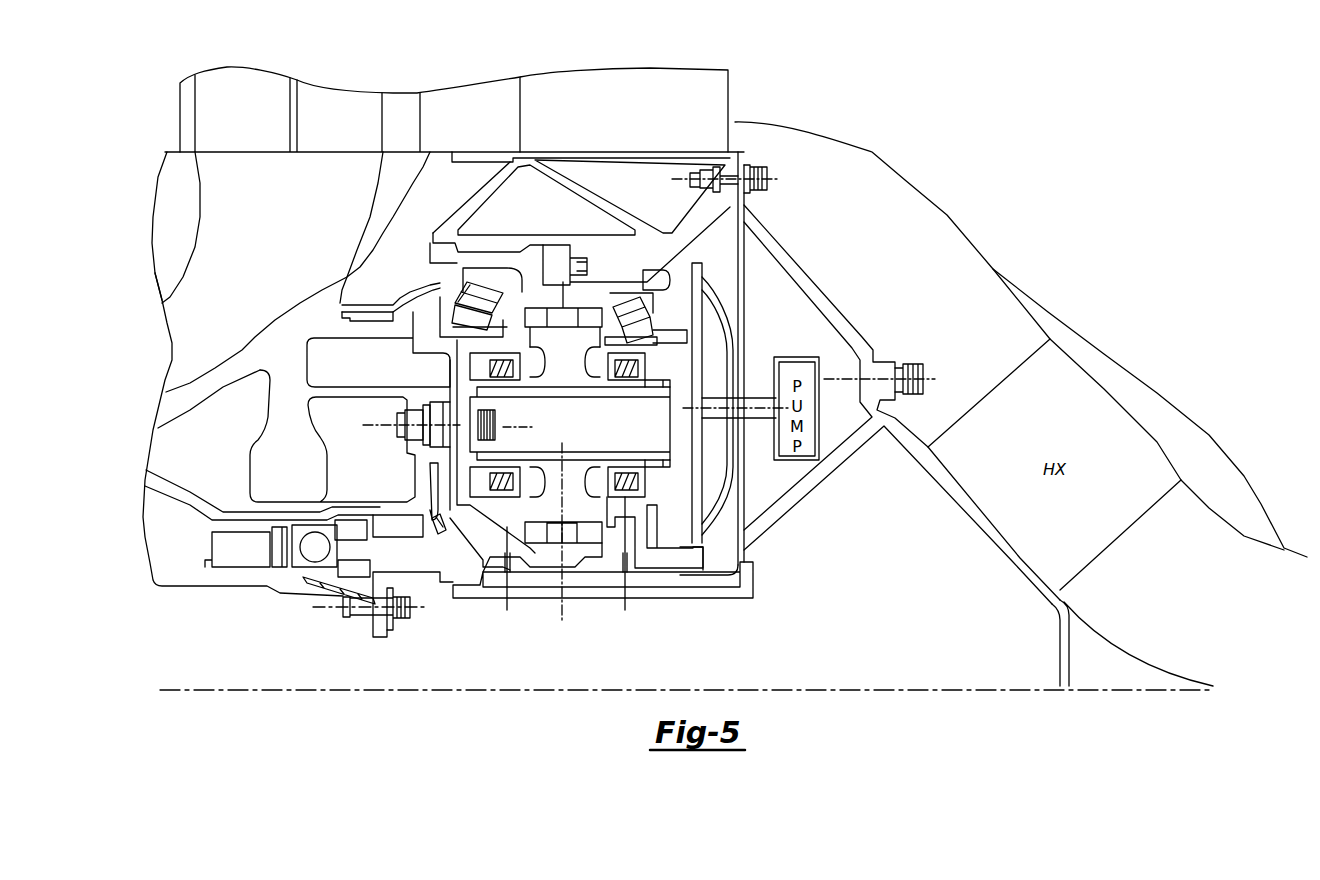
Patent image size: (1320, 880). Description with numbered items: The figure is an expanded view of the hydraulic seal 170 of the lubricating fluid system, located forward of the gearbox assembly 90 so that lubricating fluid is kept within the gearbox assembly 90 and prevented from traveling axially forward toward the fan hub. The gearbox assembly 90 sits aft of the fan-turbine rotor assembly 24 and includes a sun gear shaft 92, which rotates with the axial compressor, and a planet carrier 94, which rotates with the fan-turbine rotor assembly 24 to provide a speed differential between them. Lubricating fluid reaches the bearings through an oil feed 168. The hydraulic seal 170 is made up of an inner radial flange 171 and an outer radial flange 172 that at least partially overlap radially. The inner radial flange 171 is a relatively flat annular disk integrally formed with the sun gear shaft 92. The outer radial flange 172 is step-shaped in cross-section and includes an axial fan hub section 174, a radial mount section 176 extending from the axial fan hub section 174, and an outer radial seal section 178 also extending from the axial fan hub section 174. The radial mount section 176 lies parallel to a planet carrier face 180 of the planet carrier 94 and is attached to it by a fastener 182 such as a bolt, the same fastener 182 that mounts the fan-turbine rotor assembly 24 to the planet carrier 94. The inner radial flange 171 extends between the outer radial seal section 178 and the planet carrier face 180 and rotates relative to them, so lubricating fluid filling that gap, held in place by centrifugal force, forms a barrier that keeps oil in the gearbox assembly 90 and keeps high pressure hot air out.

The fan-turbine rotor assembly 24 is at (243, 393).
The gearbox assembly 90 is at (420, 286).
The sun gear shaft 92 is at (462, 540).
The planet carrier 94 is at (460, 500).
The oil feed 168 is at (343, 600).
The hydraulic seal 170 is at (353, 465).
The inner radial flange 171 is at (423, 490).
The outer radial flange 172 is at (373, 484).
The axial fan hub section 174 is at (427, 447).
The radial mount section 176 is at (433, 402).
The outer radial seal section 178 is at (407, 477).
The planet carrier face 180 is at (450, 375).
The fastener 182 is at (400, 421).